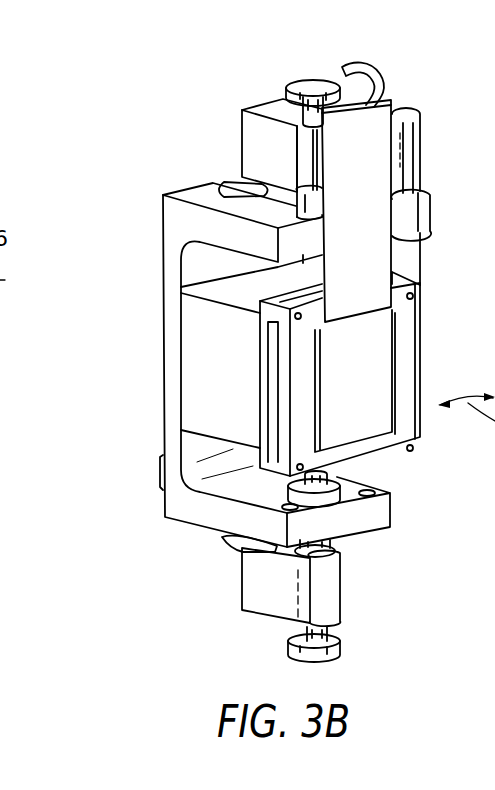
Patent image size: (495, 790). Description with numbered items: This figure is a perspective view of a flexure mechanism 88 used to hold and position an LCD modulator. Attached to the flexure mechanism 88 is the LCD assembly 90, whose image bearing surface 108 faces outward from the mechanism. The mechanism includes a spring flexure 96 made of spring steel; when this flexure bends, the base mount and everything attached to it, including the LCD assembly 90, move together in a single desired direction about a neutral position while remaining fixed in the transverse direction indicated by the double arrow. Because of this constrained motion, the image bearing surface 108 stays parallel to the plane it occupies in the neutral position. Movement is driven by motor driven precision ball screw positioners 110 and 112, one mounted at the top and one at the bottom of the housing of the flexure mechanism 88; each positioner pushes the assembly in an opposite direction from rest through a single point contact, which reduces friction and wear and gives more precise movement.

The flexure mechanism 88 is at (163, 518).
The LCD assembly 90 is at (410, 427).
The spring flexure 96 is at (200, 306).
The image bearing surface 108 is at (372, 357).
The motor driven precision ball screw positioner 110 is at (243, 150).
The motor driven precision ball screw positioner 112 is at (343, 588).